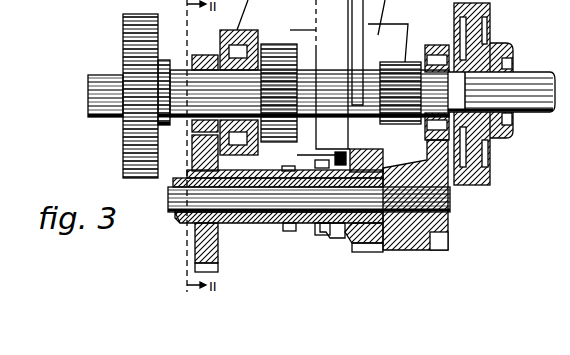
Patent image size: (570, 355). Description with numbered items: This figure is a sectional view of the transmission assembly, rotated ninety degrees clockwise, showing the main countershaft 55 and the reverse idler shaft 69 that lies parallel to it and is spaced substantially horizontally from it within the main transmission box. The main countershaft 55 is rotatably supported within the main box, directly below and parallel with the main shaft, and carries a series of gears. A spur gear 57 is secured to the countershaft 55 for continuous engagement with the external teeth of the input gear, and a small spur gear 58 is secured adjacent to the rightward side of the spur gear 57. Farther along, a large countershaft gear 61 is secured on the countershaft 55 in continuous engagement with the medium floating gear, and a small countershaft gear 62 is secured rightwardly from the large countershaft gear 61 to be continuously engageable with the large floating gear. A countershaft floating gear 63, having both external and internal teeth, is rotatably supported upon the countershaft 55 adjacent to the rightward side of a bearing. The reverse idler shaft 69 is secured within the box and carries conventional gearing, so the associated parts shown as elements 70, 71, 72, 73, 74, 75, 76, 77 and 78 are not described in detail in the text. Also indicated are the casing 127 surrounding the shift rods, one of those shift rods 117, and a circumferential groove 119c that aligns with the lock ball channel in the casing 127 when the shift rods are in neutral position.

The main countershaft 55 is at (88, 82).
The spur gear 57 is at (128, 143).
The small spur gear 58 is at (205, 55).
The large countershaft gear 61 is at (280, 78).
The small countershaft gear 62 is at (410, 64).
The countershaft floating gear 63 is at (493, 42).
The reverse idler shaft 69 is at (261, 203).
The sleeve 70 is at (229, 223).
The bushing 71 is at (178, 219).
The support block 72 is at (202, 257).
The key 73 is at (290, 232).
The housing boss 74 is at (398, 244).
The retainer 75 is at (343, 238).
The seal 76 is at (311, 158).
The spacer 77 is at (323, 235).
The ring 78 is at (368, 250).
The circumferential groove 119c is at (569, 70).
The casing 127 is at (569, 164).
The shift rod 117 is at (564, 273).